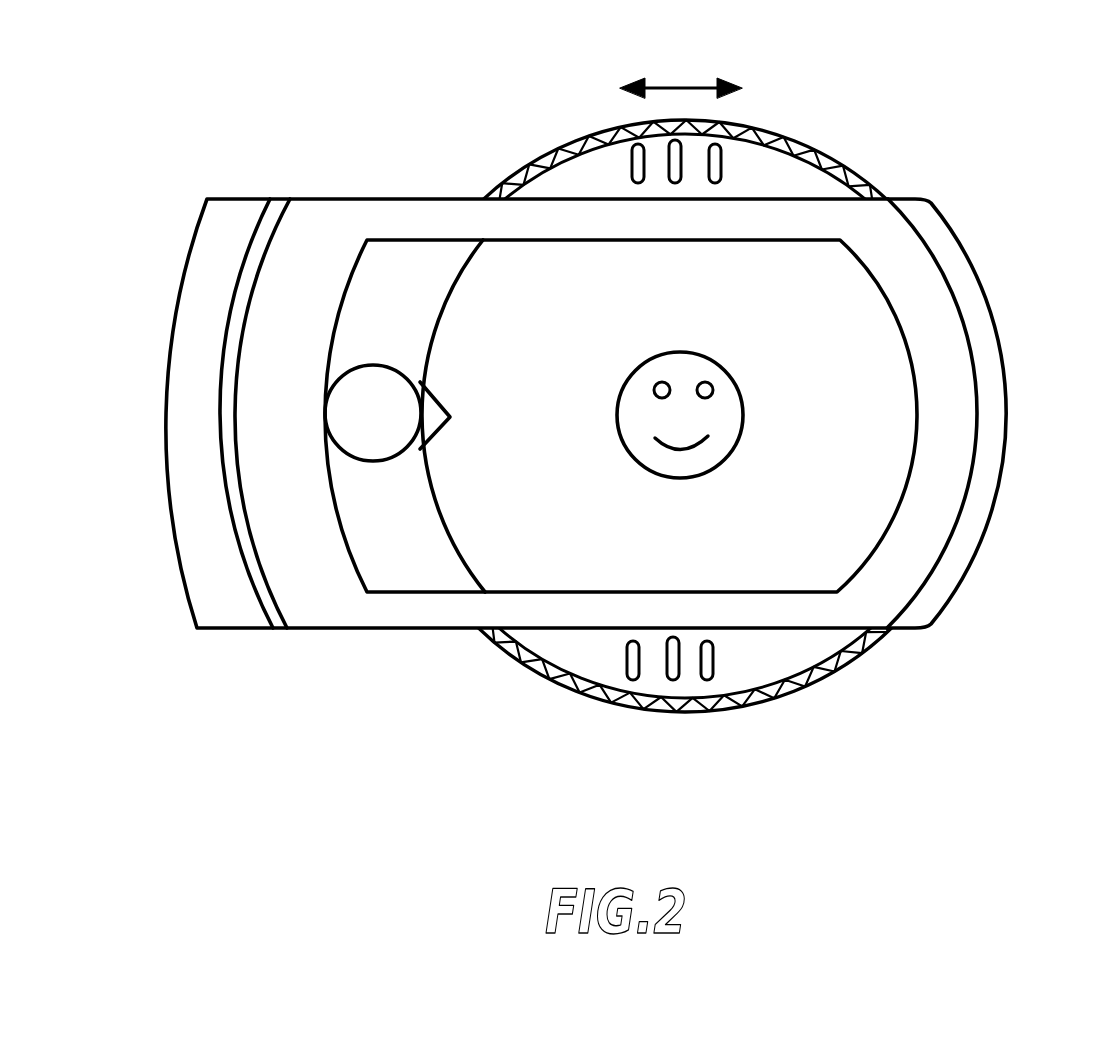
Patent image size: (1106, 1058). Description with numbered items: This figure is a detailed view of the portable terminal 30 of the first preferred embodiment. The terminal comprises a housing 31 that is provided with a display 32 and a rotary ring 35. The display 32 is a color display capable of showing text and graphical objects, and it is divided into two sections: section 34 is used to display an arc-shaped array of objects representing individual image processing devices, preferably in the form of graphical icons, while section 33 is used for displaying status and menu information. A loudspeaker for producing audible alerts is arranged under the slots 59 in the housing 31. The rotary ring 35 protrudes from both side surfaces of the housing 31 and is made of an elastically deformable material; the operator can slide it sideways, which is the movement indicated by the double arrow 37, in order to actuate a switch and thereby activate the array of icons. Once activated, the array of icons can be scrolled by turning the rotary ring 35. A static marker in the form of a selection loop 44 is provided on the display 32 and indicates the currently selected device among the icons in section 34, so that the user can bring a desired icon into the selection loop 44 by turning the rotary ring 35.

The portable terminal 30 is at (944, 196).
The housing 31 is at (215, 231).
The display 32 is at (917, 383).
The section 33 is at (873, 502).
The section 34 is at (403, 253).
The rotary ring 35 is at (790, 143).
The direction of wheel movement 37 is at (677, 83).
The selection loop 44 is at (333, 447).
The slots 59 is at (723, 162).